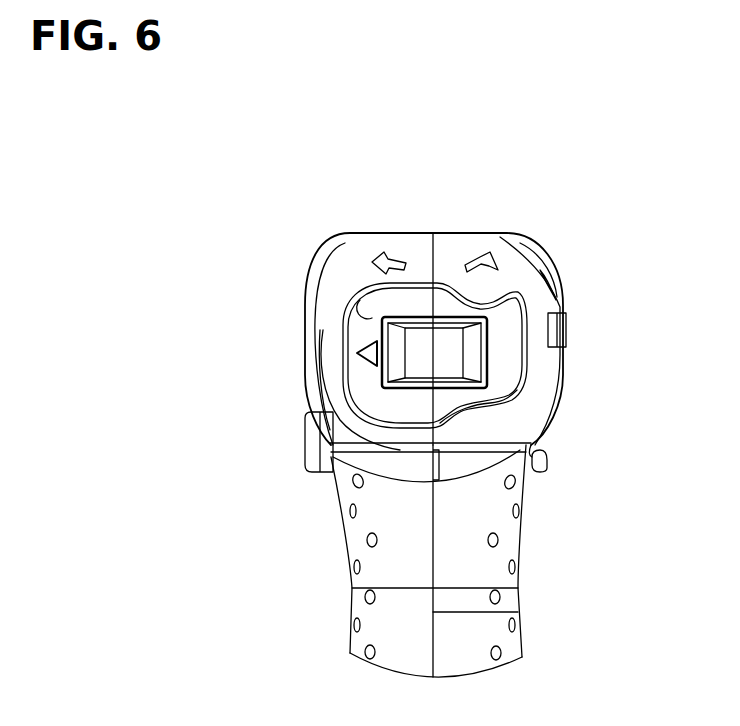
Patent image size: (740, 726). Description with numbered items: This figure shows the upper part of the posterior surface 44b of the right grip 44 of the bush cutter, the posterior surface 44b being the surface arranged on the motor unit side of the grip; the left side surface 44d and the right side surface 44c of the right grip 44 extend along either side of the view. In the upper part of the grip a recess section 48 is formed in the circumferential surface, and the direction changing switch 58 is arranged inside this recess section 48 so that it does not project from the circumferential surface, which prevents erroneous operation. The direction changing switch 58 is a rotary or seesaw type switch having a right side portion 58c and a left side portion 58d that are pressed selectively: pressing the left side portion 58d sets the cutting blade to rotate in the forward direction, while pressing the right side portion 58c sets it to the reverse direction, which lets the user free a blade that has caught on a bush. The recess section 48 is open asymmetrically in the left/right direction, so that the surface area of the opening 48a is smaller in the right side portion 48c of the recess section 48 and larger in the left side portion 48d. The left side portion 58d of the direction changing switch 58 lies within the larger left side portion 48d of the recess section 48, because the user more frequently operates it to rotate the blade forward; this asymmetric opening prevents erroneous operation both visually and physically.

The right grip 44 is at (432, 544).
The posterior surface 44b is at (441, 642).
The right side surface 44c is at (518, 580).
The left side surface 44d is at (352, 580).
The recess section 48 is at (365, 299).
The opening 48a is at (323, 330).
The right side portion 48c is at (502, 377).
The left side portion 48d is at (359, 330).
The direction changing switch 58 is at (445, 347).
The right side portion 58c is at (515, 335).
The left side portion 58d is at (377, 302).